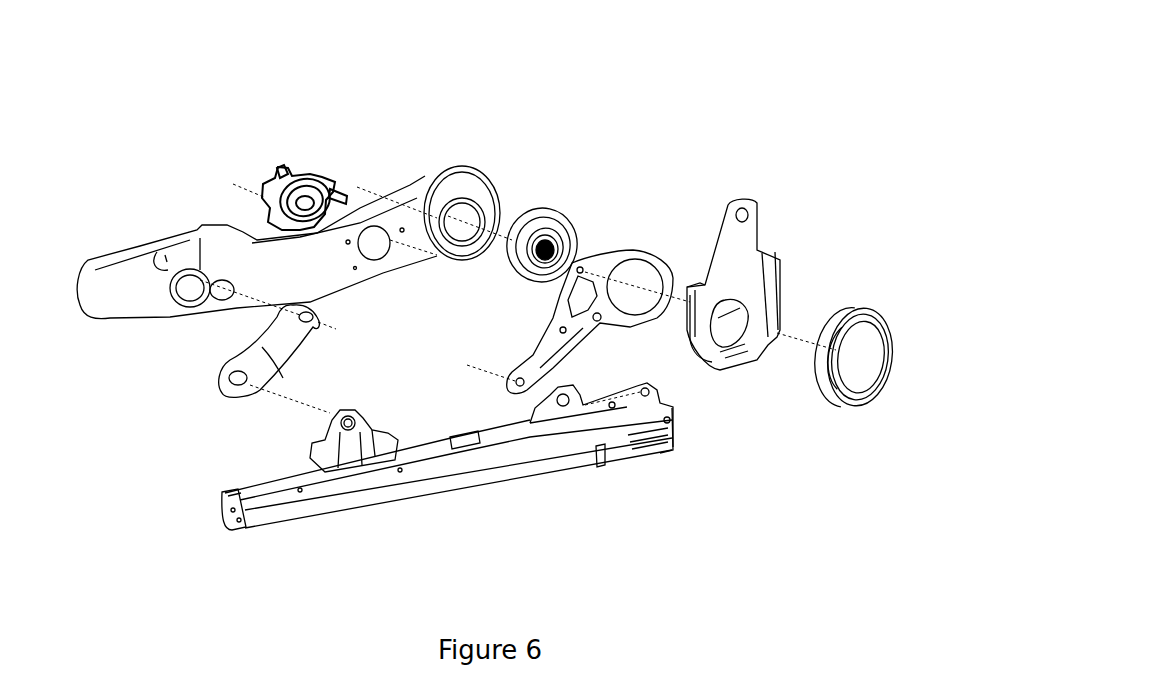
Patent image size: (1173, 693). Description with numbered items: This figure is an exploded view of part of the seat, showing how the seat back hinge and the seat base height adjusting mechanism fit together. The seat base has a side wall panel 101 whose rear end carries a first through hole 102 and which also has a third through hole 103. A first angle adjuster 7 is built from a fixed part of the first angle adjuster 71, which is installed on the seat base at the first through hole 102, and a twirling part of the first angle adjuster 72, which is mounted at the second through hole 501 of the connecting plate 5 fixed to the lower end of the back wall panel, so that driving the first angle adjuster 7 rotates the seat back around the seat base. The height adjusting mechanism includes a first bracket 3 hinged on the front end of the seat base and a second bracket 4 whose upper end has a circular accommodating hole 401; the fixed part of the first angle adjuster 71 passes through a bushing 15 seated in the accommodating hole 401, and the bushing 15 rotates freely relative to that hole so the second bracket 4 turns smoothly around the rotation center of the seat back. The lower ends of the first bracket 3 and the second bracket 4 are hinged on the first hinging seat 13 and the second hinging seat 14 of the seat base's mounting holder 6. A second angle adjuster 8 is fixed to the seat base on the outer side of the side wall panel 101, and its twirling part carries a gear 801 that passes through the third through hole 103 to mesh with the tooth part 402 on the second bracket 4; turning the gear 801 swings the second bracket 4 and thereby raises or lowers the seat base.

The first bracket 3 is at (260, 367).
The second bracket 4 is at (642, 333).
The connecting plate 5 is at (794, 265).
The seat base's mounting holder 6 is at (401, 493).
The first angle adjuster 7 is at (563, 200).
The second angle adjuster 8 is at (291, 156).
The first hinging seat 13 is at (347, 437).
The second hinging seat 14 is at (545, 402).
The bushing 15 is at (833, 393).
The fixed part of the first angle adjuster 71 is at (570, 234).
The twirling part of the first angle adjuster 72 is at (535, 210).
The side wall panel 101 is at (263, 273).
The first through hole 102 is at (470, 215).
The third through hole 103 is at (373, 247).
The accommodating hole 401 is at (627, 284).
The tooth part 402 is at (580, 325).
The second through hole 501 is at (720, 327).
The gear 801 is at (318, 203).